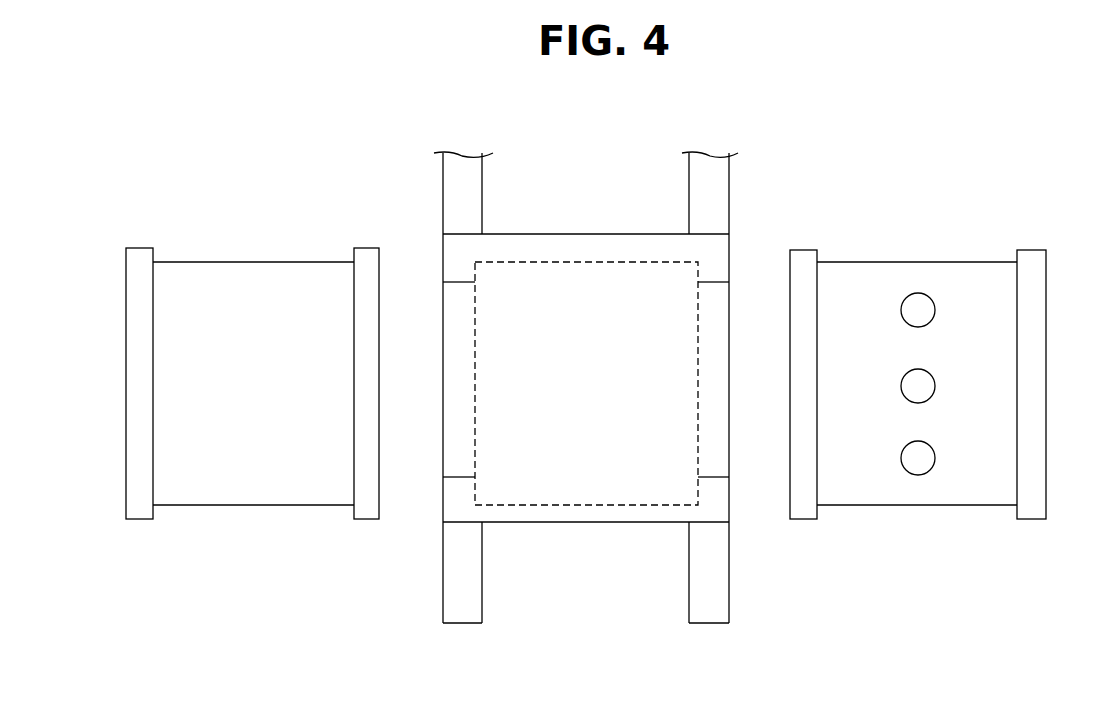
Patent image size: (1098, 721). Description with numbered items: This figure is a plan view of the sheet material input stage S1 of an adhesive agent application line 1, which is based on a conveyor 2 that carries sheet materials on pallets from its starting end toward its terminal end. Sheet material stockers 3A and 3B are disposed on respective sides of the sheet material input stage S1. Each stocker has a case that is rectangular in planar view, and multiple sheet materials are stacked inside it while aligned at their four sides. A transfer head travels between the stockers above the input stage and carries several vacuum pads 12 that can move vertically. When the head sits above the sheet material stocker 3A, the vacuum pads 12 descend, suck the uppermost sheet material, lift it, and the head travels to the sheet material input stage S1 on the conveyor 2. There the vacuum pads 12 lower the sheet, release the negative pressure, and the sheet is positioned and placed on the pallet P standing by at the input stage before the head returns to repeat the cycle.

The adhesive agent application line 1 is at (593, 397).
The conveyor 2 is at (624, 385).
The sheet material stocker 3A is at (939, 406).
The sheet material stocker 3B is at (231, 431).
The vacuum pad 12 is at (915, 293).
The pallet P is at (592, 525).
The sheet material input stage S1 is at (739, 217).